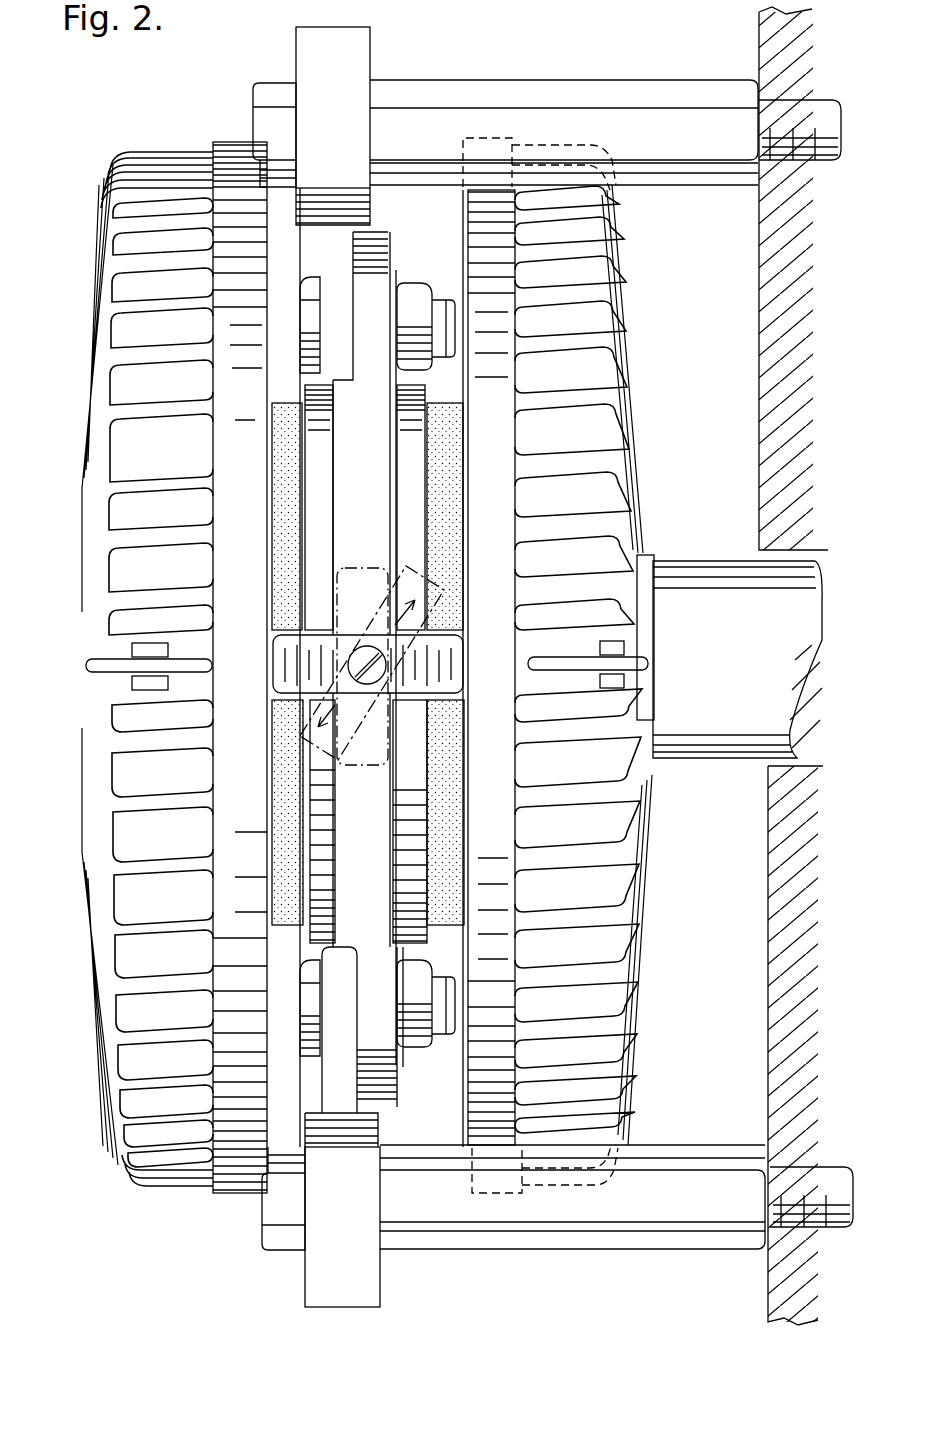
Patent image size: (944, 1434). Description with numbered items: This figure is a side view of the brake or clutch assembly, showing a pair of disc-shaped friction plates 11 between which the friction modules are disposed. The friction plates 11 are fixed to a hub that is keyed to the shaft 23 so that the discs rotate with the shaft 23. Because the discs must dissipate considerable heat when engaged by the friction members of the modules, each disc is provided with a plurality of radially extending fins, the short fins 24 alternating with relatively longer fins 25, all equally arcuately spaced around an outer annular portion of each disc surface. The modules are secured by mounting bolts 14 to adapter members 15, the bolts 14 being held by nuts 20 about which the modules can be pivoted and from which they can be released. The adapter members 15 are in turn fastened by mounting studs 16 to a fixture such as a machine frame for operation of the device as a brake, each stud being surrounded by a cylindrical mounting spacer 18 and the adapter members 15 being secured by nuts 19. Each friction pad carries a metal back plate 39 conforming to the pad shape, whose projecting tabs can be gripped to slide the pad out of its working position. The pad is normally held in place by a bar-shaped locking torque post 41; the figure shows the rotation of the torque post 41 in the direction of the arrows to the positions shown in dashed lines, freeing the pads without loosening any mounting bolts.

The friction plate 11 is at (220, 140).
The mounting bolt 14 is at (302, 333).
The adapter member 15 is at (362, 42).
The mounting stud 16 is at (828, 100).
The mounting spacer 18 is at (557, 82).
The nut 19 is at (263, 86).
The nut 20 is at (420, 287).
The shaft 23 is at (715, 563).
The short fin 24 is at (178, 397).
The long fin 25 is at (178, 343).
The back plate 39 is at (302, 400).
The locking torque post 41 is at (272, 650).